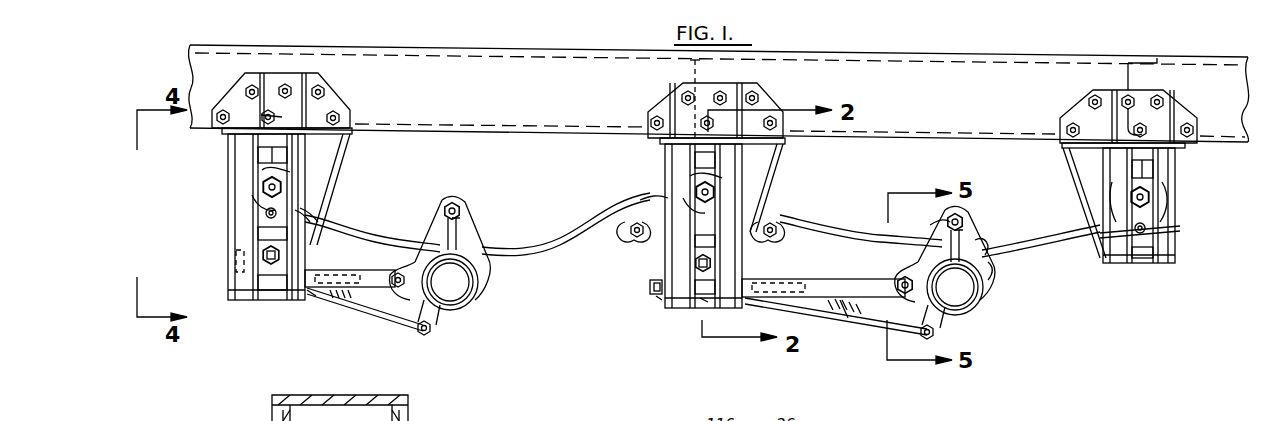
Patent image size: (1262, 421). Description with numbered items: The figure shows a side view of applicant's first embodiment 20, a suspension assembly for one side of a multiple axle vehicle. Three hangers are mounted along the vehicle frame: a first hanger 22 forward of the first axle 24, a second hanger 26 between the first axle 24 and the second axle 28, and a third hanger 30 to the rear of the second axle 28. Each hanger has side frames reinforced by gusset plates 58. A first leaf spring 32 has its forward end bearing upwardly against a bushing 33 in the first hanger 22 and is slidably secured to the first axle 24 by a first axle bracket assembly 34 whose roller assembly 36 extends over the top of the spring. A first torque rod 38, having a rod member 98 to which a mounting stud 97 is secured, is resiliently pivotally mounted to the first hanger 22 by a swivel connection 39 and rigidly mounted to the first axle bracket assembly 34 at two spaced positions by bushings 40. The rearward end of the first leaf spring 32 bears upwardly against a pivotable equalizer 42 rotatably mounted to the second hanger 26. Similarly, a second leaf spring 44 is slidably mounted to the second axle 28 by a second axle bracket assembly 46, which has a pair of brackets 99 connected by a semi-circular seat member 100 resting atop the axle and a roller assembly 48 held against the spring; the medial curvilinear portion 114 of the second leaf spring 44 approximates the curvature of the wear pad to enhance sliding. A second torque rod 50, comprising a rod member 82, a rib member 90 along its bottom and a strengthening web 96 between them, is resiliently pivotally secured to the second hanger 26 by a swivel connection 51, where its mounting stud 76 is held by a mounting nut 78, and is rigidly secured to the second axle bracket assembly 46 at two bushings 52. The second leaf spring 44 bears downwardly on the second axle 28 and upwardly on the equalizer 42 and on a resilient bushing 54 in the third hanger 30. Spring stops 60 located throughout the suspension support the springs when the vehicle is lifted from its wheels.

The first embodiment 20 is at (682, 350).
The first hanger 22 is at (235, 232).
The first axle 24 is at (470, 300).
The second hanger 26 is at (670, 246).
The second axle 28 is at (975, 304).
The third hanger 30 is at (1105, 262).
The first leaf spring 32 is at (537, 250).
The bushing 33 is at (262, 182).
The first axle bracket assembly 34 is at (436, 210).
The roller assembly 36 is at (463, 210).
The first torque rod 38 is at (368, 302).
The swivel connection 39 is at (263, 256).
The bushings 40 is at (424, 332).
The pivotable equalizer 42 is at (625, 194).
The second leaf spring 44 is at (1030, 246).
The second axle bracket assembly 46 is at (978, 222).
The roller assembly 48 is at (964, 215).
The second torque rod 50 is at (845, 318).
The swivel connection 51 is at (700, 300).
The bushings 52 is at (898, 280).
The resilient bushing 54 is at (1150, 197).
The gusset plates 58 is at (412, 420).
The spring stops 60 is at (266, 213).
The mounting stud 76 is at (650, 286).
The mounting nut 78 is at (660, 298).
The rod member 82 is at (818, 279).
The rib member 90 is at (870, 338).
The strengthening web 96 is at (828, 318).
The mounting stud 97 is at (318, 300).
The rod member 98 is at (355, 270).
The brackets 99 is at (940, 226).
The semi-circular seat member 100 is at (988, 270).
The medial curvilinear portion 114 is at (992, 244).